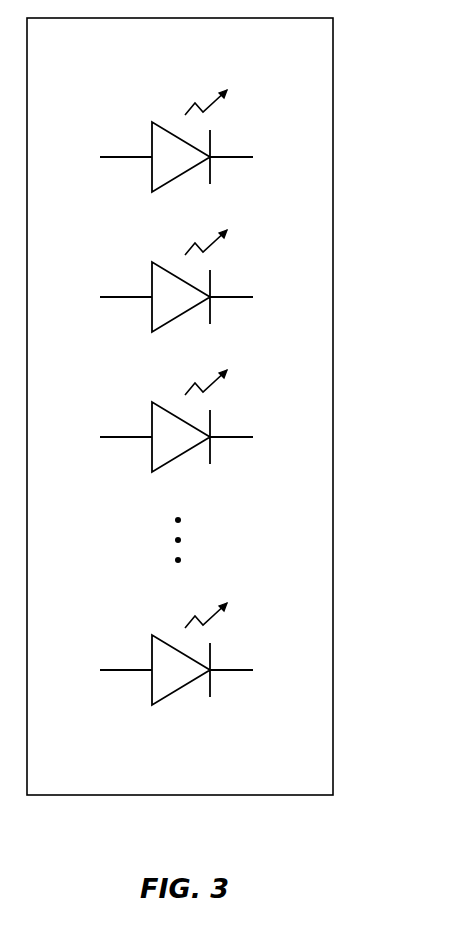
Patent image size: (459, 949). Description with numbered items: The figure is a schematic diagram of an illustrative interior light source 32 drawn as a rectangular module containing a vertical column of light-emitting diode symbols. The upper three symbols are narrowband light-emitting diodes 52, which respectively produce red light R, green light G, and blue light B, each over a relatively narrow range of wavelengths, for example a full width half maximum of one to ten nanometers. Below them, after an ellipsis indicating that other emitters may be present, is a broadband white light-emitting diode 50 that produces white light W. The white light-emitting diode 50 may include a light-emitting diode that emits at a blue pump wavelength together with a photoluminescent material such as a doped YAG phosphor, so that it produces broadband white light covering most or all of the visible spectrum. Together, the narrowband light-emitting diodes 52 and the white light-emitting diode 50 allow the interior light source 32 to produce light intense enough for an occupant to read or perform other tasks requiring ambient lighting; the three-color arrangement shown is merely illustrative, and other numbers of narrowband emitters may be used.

The interior light source 32 is at (333, 225).
The narrowband light-emitting diodes 52 is at (152, 177).
The white light-emitting diode 50 is at (152, 690).